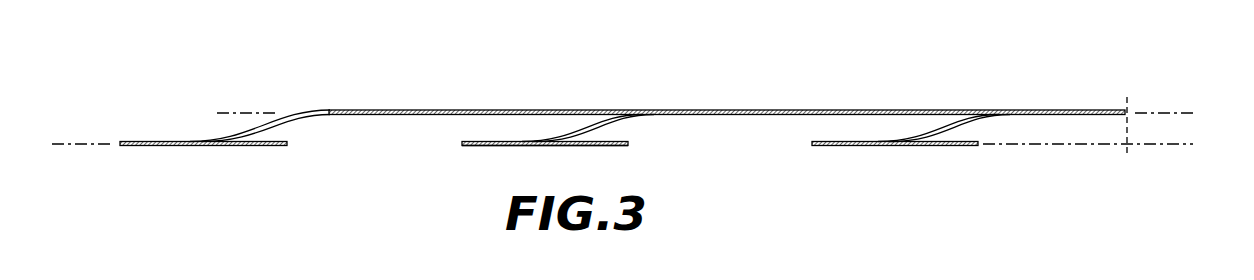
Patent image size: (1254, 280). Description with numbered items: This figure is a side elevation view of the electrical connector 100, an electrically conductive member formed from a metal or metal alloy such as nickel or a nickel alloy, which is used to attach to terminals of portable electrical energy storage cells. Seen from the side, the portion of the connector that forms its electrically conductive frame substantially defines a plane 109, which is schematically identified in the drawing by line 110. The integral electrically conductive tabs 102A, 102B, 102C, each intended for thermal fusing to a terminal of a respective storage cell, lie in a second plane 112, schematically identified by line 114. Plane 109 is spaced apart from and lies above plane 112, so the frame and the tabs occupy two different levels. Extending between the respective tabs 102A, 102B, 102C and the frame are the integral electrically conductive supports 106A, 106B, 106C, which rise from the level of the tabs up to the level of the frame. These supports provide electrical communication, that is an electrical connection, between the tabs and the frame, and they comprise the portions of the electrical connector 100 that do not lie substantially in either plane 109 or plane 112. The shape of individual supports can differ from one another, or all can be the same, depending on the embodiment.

The electrical connector 100 is at (883, 62).
The plane 109 is at (543, 98).
The integral electrically conductive tab 102A is at (262, 148).
The integral electrically conductive tab 102B is at (603, 148).
The integral electrically conductive tab 102C is at (954, 148).
The integral electrically conductive support 106A is at (274, 132).
The integral electrically conductive support 106B is at (622, 132).
The integral electrically conductive support 106C is at (970, 133).
The line 110 is at (240, 111).
The line 114 is at (80, 147).
The second plane 112 is at (488, 158).